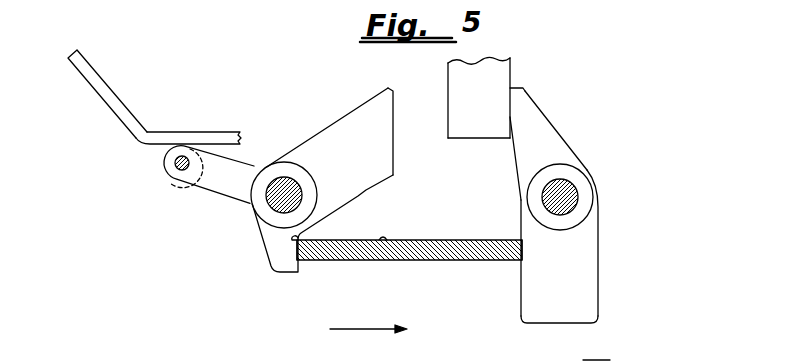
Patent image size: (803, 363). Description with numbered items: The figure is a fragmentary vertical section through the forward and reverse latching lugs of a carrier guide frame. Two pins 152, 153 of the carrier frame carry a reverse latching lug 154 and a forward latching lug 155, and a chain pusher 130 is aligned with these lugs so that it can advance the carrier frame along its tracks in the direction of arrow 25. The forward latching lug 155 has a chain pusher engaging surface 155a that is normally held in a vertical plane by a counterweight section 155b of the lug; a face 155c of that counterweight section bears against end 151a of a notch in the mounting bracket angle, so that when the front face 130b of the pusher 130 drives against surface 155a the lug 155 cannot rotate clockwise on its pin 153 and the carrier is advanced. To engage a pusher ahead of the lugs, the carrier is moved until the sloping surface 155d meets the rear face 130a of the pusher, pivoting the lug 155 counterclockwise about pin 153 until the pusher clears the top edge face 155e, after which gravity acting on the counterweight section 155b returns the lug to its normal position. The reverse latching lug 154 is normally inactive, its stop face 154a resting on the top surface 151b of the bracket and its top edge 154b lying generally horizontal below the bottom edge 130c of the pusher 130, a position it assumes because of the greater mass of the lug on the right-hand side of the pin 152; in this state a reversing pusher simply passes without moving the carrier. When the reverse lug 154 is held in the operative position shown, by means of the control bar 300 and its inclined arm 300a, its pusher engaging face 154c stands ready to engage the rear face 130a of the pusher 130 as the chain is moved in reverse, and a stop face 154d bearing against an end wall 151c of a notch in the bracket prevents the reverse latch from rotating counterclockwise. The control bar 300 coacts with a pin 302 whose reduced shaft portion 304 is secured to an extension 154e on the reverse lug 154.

The arrow 25 is at (347, 330).
The chain pusher 130 is at (500, 101).
The rear face of pusher 130a is at (448, 108).
The front face of pusher 130b is at (510, 115).
The bottom edge of pusher 130c is at (466, 143).
The end of notch in mounting bracket angle 151a is at (525, 240).
The top surface of bracket 151b is at (380, 240).
The end wall of notch in bracket 151c is at (300, 238).
The pin 152 is at (272, 207).
The pin 153 is at (577, 197).
The reverse latching lug 154 is at (299, 176).
The stop face 154a is at (383, 183).
The top edge 154b is at (308, 132).
The pusher engaging face 154c is at (397, 102).
The stop face 154d is at (272, 265).
The extension 154e is at (212, 187).
The forward latching lug 155 is at (559, 205).
The chain pusher engaging surface 155a is at (506, 106).
The counterweight section 155b is at (547, 320).
The face of counterweight section 155c is at (518, 261).
The sloping surface 155d is at (553, 125).
The top edge face 155e is at (513, 87).
The control bar 300 is at (154, 97).
The actuating lever inclined arm 300a is at (113, 93).
The pin 302 is at (180, 197).
The reduced shaft portion 304 is at (178, 164).